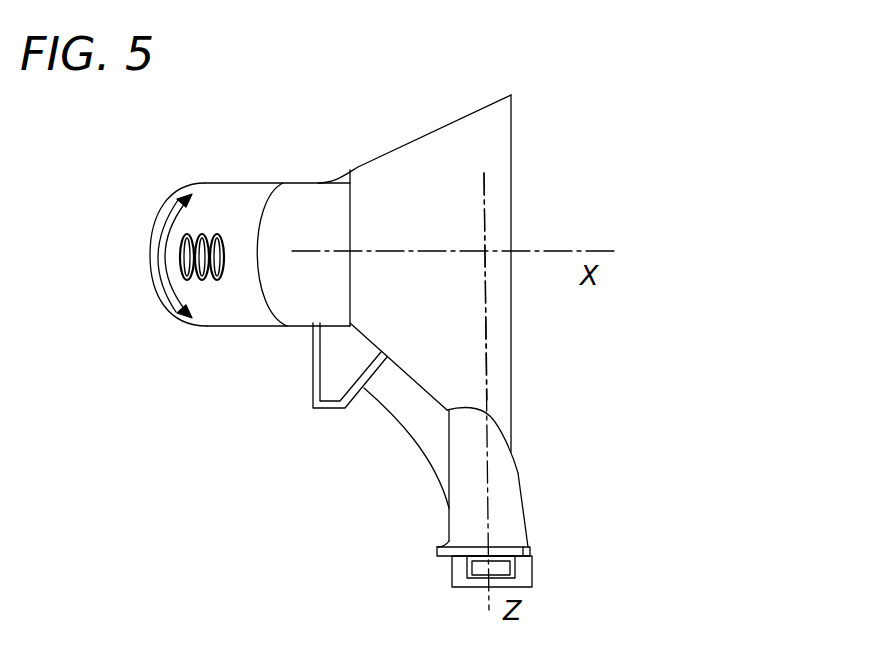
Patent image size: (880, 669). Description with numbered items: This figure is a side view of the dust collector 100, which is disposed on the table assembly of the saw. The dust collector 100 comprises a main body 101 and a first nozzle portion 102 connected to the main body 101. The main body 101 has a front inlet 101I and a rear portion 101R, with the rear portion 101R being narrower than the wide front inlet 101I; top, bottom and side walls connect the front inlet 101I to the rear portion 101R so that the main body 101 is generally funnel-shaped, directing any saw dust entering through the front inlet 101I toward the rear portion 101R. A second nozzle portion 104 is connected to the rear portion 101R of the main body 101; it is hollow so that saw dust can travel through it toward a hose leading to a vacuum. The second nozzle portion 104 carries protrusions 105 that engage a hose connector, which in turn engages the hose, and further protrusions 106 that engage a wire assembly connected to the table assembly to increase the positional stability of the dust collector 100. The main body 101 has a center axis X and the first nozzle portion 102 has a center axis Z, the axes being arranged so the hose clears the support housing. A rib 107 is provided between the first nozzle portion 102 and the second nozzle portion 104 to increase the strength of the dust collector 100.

The dust collector 100 is at (660, 292).
The main body 101 is at (432, 178).
The rear portion 101R is at (360, 223).
The front inlet 101I is at (498, 178).
The first nozzle portion 102 is at (488, 498).
The second nozzle portion 104 is at (248, 232).
The protrusions 105 is at (158, 223).
The protrusions 106 is at (208, 277).
The rib 107 is at (418, 413).